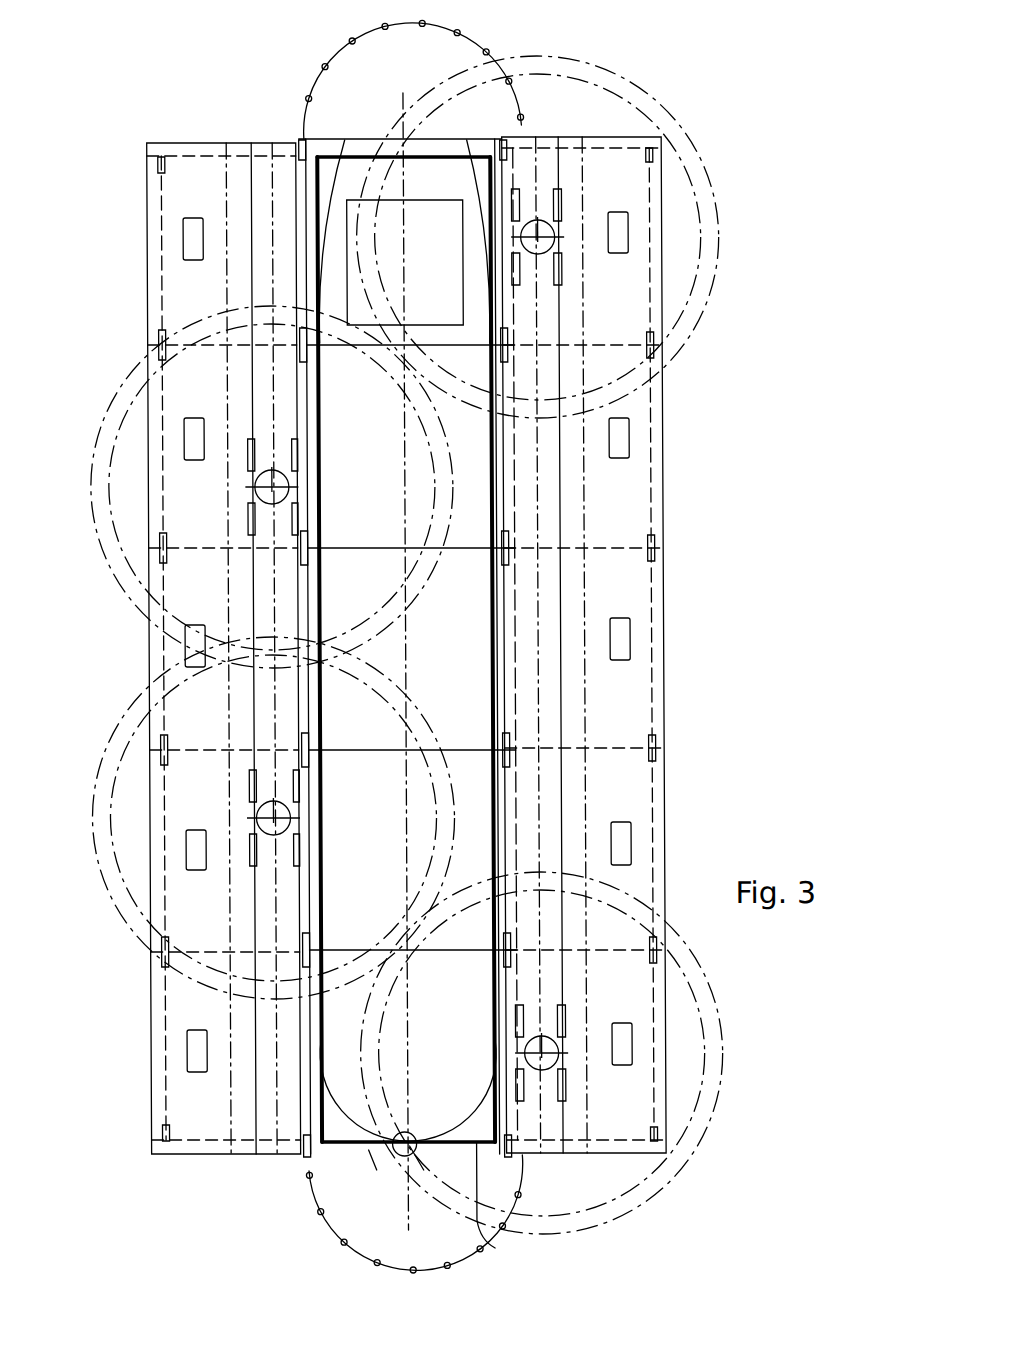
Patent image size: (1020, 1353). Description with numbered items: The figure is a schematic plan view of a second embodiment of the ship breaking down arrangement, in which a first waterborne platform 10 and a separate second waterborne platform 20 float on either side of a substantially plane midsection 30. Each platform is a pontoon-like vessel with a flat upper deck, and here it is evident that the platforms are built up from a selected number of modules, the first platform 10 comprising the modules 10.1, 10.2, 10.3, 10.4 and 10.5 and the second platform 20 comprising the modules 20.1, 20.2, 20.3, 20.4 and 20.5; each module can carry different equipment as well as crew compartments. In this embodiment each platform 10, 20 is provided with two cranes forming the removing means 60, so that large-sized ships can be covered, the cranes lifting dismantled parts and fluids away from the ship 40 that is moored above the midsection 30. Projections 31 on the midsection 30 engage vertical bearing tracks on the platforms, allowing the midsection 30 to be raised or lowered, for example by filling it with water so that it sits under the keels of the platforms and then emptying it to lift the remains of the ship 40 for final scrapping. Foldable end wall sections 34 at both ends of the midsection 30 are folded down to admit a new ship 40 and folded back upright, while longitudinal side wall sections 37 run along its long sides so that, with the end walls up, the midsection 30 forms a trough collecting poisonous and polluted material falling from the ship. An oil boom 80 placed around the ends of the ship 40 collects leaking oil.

The first waterborne platform 10 is at (196, 160).
The module 10.1 is at (159, 227).
The module 10.2 is at (167, 490).
The module 10.3 is at (147, 662).
The module 10.4 is at (146, 860).
The module 10.5 is at (165, 1085).
The second waterborne platform 20 is at (616, 150).
The module 20.1 is at (639, 277).
The module 20.2 is at (648, 440).
The module 20.3 is at (634, 657).
The module 20.4 is at (646, 840).
The module 20.5 is at (638, 1030).
The midsection 30 is at (472, 1240).
The projection 31 is at (519, 135).
The foldable end wall section 34 is at (326, 147).
The longitudinal side wall section 37 is at (299, 150).
The ship 40 is at (358, 1108).
The removing means (crane) 60 is at (544, 218).
The oil boom 80 is at (478, 47).